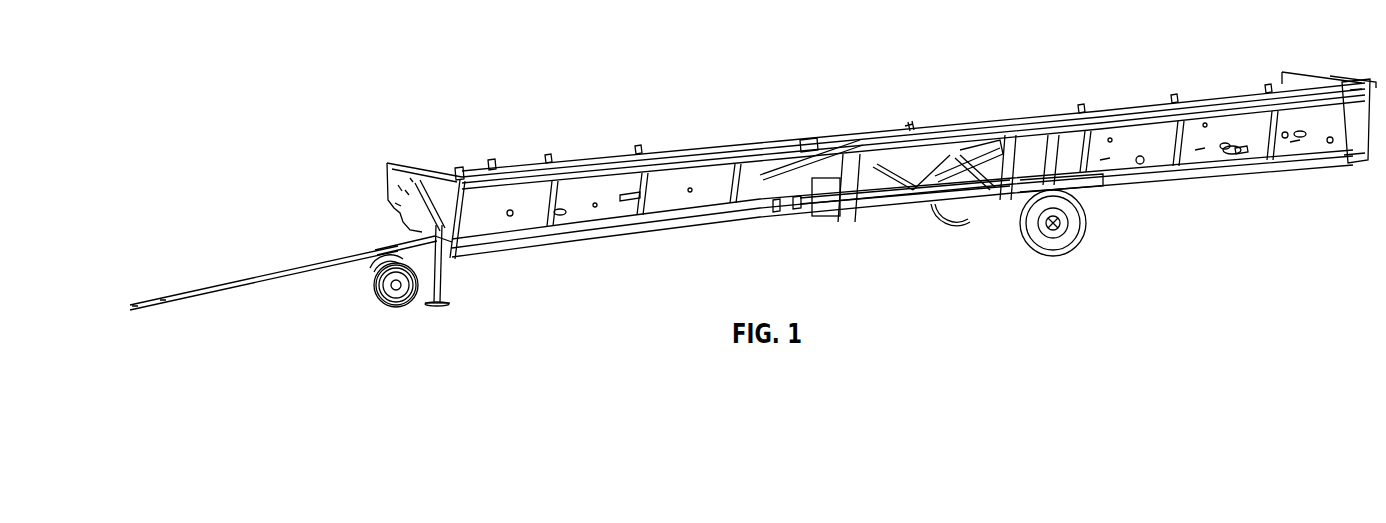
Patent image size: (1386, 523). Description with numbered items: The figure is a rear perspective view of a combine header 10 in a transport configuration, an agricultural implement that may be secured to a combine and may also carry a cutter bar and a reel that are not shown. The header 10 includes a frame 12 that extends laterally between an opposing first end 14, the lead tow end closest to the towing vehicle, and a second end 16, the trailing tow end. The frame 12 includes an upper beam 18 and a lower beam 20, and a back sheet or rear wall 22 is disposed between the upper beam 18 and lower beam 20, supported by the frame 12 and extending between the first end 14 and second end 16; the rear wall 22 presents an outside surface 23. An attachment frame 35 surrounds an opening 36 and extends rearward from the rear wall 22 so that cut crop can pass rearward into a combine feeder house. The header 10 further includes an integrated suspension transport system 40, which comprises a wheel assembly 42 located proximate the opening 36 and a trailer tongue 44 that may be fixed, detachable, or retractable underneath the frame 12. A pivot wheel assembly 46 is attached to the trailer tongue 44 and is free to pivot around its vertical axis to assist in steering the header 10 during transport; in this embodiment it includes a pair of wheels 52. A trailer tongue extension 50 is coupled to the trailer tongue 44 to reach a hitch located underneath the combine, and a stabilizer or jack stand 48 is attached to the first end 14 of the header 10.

The combine header 10 is at (428, 90).
The frame 12 is at (1075, 107).
The first end 14 is at (387, 187).
The second end 16 is at (1363, 147).
The upper beam 18 is at (1193, 100).
The lower beam 20 is at (1183, 180).
The rear wall 22 is at (1220, 130).
The outside surface 23 is at (1140, 132).
The attachment frame 35 is at (990, 143).
The opening 36 is at (878, 187).
The integrated suspension transport system 40 is at (987, 243).
The wheel assembly 42 is at (1092, 212).
The trailer tongue 44 is at (417, 234).
The pivot wheel assembly 46 is at (367, 287).
The jack stand 48 is at (445, 273).
The trailer tongue extension 50 is at (207, 285).
The wheels 52 is at (393, 312).